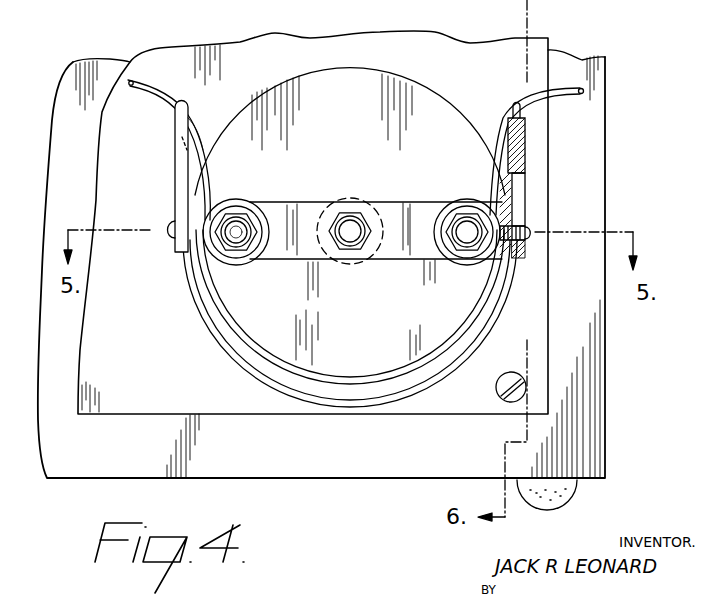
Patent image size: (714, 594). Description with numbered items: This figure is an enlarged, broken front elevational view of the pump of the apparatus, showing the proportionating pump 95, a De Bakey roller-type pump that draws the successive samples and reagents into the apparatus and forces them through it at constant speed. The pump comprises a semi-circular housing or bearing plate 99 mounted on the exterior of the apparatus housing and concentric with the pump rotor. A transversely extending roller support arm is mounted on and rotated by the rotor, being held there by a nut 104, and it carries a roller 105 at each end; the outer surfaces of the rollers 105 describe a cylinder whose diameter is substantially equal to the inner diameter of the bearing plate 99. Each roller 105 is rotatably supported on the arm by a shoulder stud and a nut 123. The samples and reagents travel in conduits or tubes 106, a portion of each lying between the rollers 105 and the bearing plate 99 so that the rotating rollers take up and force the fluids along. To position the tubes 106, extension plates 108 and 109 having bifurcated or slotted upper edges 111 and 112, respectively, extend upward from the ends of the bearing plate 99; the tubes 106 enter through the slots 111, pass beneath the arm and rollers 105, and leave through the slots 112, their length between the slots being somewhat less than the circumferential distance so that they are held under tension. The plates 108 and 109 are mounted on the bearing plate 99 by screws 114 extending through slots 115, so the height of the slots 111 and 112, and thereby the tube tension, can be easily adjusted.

The proportionating pump 95 is at (388, 64).
The bearing plate 99 is at (481, 325).
The nut 104 is at (353, 222).
The roller 105 is at (237, 207).
The conduits 106 is at (165, 115).
The extension plate 108 is at (525, 157).
The extension plate 109 is at (175, 170).
The slotted upper edge 111 is at (525, 128).
The slotted upper edge 112 is at (192, 115).
The screw 114 is at (167, 228).
The slot 115 is at (520, 195).
The nut 123 is at (234, 240).